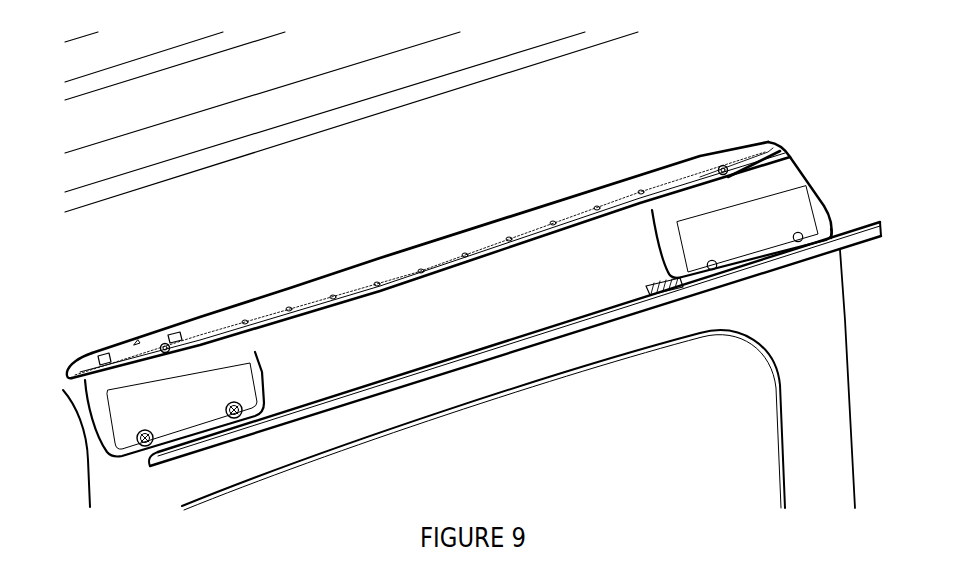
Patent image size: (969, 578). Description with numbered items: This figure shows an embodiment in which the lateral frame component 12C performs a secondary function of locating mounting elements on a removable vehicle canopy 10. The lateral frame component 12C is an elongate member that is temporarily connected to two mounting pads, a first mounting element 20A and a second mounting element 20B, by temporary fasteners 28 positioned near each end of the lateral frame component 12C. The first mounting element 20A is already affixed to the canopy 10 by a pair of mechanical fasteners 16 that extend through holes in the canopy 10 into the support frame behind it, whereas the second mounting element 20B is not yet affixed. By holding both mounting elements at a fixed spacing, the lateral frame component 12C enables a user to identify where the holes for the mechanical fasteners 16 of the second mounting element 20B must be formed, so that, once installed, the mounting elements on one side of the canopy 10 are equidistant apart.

The removable canopy 10 is at (610, 352).
The lateral frame component 12C is at (422, 255).
The mechanical fasteners 16 is at (155, 445).
The first mounting pad 20A is at (230, 375).
The second mounting pad 20B is at (775, 238).
The temporary fasteners 28 is at (165, 343).